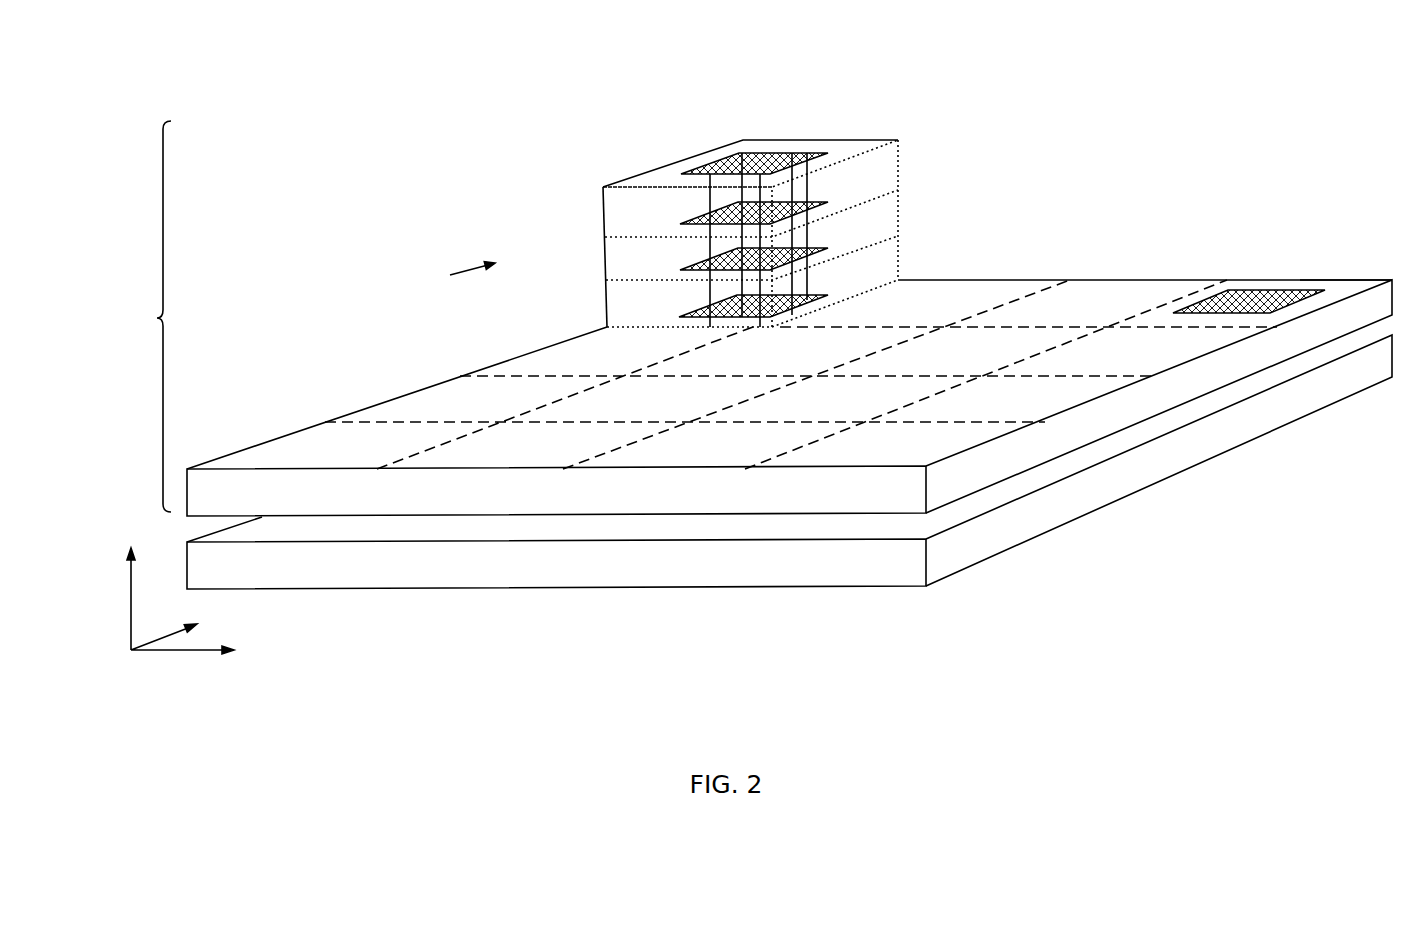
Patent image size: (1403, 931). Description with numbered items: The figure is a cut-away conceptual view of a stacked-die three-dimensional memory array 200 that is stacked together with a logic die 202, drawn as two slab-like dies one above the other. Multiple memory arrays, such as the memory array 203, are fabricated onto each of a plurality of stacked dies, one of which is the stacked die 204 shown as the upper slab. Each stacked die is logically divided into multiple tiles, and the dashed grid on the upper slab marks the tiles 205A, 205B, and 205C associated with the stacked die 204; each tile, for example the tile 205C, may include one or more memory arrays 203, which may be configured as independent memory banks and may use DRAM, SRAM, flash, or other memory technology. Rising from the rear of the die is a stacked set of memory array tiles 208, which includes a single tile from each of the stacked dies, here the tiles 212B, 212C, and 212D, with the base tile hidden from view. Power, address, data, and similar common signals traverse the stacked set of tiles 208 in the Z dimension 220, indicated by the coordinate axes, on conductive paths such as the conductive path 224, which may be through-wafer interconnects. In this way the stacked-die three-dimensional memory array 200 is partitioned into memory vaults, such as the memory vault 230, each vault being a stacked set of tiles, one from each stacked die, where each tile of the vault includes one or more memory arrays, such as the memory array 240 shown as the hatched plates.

The stacked-die 3D memory array 200 is at (146, 316).
The logic die 202 is at (1062, 502).
The memory array 203 is at (1253, 290).
The stacked die 204 is at (1162, 393).
The tile 205A is at (977, 293).
The tile 205B is at (1082, 295).
The tile 205C is at (1347, 290).
The stacked set of memory array tiles 208 is at (595, 108).
The tile 212B is at (897, 261).
The tile 212C is at (897, 218).
The tile 212D is at (897, 167).
The Z dimension 220 is at (140, 508).
The conductive path 224 is at (708, 203).
The memory vault 230 is at (454, 277).
The memory array 240 is at (788, 152).